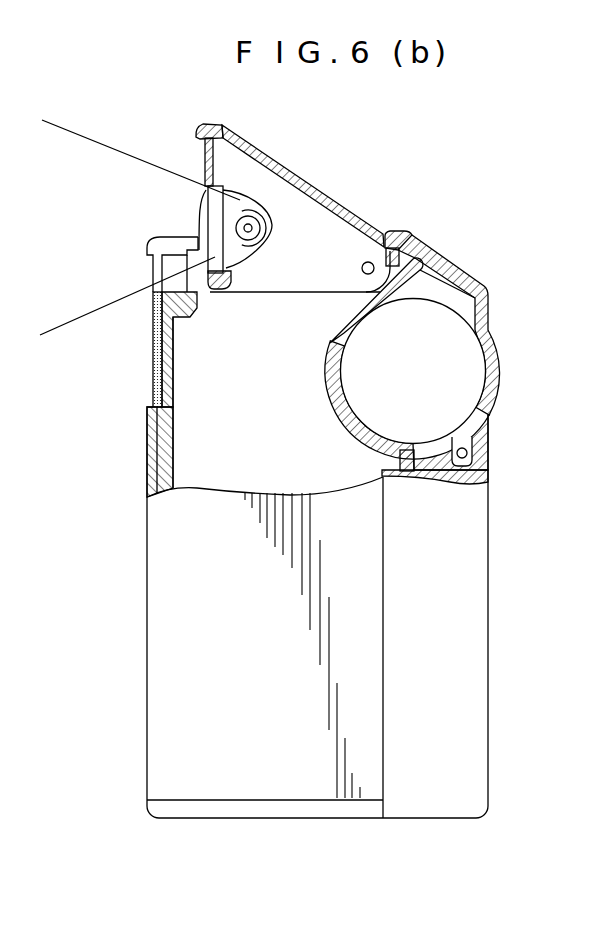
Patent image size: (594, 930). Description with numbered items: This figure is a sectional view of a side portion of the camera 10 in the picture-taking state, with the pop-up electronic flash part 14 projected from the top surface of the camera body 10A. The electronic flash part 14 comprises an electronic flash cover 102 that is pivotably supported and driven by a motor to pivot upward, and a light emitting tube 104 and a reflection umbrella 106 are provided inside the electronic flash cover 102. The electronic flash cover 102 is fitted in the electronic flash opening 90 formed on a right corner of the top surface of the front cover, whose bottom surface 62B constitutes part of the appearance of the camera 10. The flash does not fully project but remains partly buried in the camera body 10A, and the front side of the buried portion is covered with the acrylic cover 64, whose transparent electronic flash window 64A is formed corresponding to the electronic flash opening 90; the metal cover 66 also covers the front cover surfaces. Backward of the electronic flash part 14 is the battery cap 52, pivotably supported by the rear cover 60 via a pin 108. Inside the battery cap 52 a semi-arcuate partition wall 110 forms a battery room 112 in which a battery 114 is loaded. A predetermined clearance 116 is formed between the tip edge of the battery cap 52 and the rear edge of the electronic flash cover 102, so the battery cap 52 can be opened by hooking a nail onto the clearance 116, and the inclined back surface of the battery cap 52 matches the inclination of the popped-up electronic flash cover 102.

The camera 10 is at (480, 151).
The camera body 10A is at (147, 587).
The electronic flash part 14 is at (190, 216).
The battery cap 52 is at (490, 294).
The rear cover 60 is at (475, 585).
The bottom surface (bottom cover) 62B is at (199, 818).
The acrylic cover (window member) 64 is at (152, 352).
The electronic flash window 64A is at (150, 273).
The metal cover 66 is at (148, 458).
The electronic flash opening 90 is at (196, 238).
The electronic flash cover 102 is at (378, 196).
The light emitting tube 104 is at (253, 220).
The reflection umbrella 106 is at (258, 250).
The pin 108 is at (470, 453).
The semi-arcuate partition wall 110 is at (340, 392).
The battery room 112 is at (433, 290).
The battery 114 is at (452, 372).
The clearance 116 is at (400, 229).